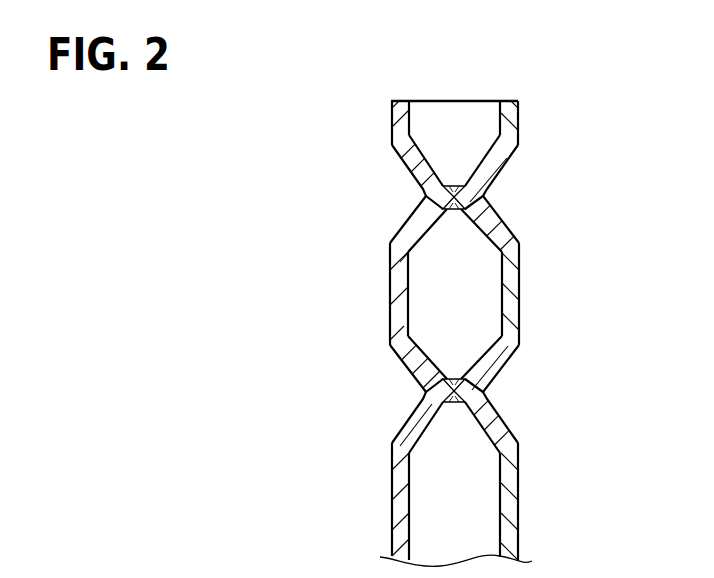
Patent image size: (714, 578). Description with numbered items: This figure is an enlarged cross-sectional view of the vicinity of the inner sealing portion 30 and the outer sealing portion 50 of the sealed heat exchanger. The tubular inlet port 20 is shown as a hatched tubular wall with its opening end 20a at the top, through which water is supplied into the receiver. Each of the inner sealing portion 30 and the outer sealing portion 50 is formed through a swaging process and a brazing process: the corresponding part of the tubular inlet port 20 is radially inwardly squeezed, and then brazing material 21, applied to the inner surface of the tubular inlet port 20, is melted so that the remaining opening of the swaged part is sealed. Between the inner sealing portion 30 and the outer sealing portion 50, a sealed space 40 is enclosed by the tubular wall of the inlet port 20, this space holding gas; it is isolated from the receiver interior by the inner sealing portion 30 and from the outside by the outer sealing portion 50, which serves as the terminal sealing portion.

The tubular inlet port 20 is at (497, 333).
The opening end 20a is at (453, 100).
The brazing material 21 is at (432, 189).
The inner sealing portion 30 is at (478, 394).
The sealed space 40 is at (460, 300).
The outer sealing portion 50 is at (478, 198).